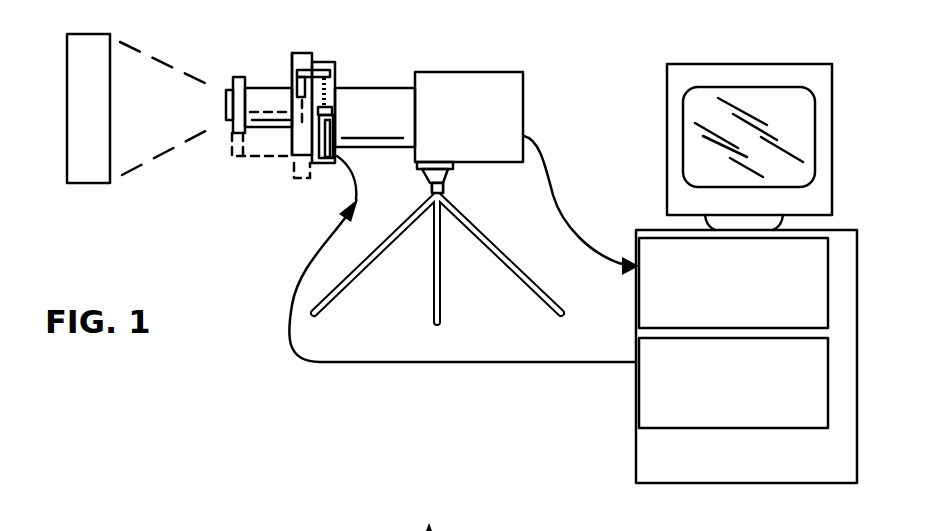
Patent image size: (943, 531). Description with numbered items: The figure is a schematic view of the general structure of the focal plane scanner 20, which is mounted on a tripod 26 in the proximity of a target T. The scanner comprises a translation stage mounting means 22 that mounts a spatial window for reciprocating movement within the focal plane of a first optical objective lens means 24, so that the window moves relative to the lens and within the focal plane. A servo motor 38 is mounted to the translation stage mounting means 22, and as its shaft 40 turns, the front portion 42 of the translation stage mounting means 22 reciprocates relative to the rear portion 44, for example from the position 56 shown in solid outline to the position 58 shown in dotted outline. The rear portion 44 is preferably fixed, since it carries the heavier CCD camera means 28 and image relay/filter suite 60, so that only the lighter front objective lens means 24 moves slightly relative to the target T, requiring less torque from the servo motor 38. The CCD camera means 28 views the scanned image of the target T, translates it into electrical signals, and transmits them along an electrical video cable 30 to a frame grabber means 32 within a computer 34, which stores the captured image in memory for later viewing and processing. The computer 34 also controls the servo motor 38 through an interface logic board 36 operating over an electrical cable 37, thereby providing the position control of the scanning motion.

The target T is at (93, 34).
The focal plane scanner 20 is at (381, 40).
The translation stage mounting means 22 is at (303, 38).
The first optical objective lens means 24 is at (251, 87).
The tripod 26 is at (463, 201).
The CCD camera means 28 is at (462, 72).
The electrical video cable 30 is at (556, 205).
The frame grabber means 32 is at (823, 262).
The computer 34 is at (636, 452).
The interface logic board 36 is at (796, 428).
The electrical cable 37 is at (340, 363).
The servo motor 38 is at (332, 137).
The shaft 40 is at (327, 88).
The front portion 42 is at (292, 53).
The rear portion 44 is at (332, 62).
The position 56 is at (212, 110).
The position 58 is at (233, 160).
The image relay/filter suite 60 is at (395, 87).